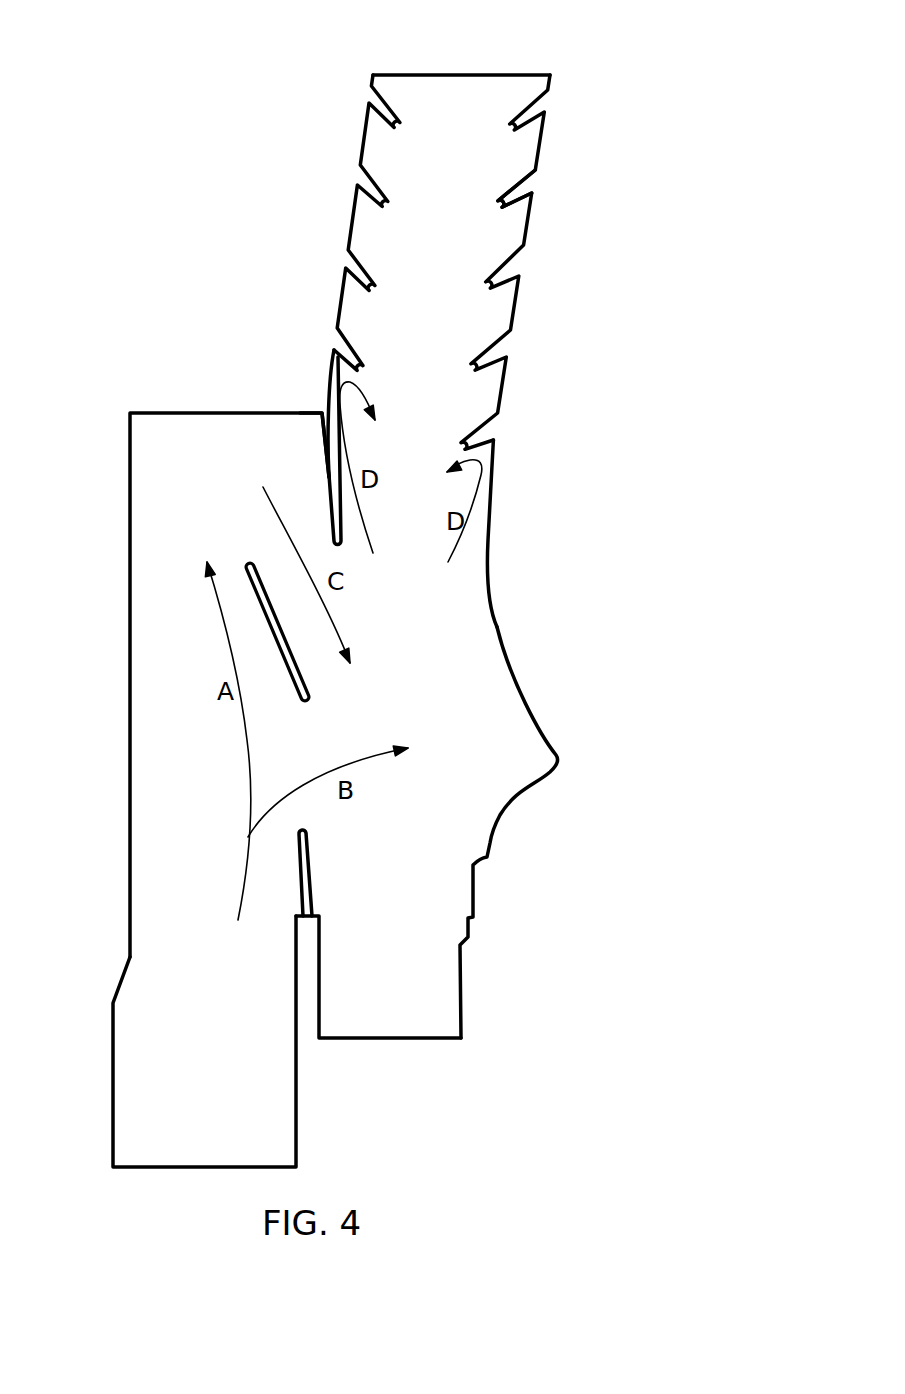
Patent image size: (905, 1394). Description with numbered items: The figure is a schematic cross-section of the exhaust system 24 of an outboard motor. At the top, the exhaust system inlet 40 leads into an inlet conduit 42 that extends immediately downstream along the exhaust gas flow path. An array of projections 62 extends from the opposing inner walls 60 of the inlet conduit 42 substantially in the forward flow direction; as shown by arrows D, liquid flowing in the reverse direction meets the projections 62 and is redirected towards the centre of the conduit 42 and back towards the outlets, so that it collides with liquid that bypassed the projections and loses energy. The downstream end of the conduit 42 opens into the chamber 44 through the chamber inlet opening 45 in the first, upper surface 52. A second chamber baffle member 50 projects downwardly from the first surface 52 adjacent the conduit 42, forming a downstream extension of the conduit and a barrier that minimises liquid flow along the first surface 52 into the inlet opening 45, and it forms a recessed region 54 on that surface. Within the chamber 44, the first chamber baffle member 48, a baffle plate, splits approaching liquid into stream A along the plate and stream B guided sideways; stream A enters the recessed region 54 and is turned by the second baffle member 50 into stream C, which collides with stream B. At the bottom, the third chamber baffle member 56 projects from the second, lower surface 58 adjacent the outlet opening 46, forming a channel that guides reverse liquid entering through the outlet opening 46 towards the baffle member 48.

The exhaust system 24 is at (122, 114).
The exhaust system inlet 40 is at (456, 74).
The inlet conduit 42 is at (462, 241).
The chamber 44 is at (385, 710).
The chamber inlet opening 45 is at (438, 487).
The outlet opening 46 is at (205, 980).
The first chamber baffle member 48 is at (260, 598).
The second chamber baffle member 50 is at (333, 482).
The first surface 52 is at (298, 411).
The recessed region 54 is at (217, 448).
The third chamber baffle member 56 is at (305, 870).
The second surface 58 is at (403, 1040).
The inner wall 60 is at (353, 213).
The array of projections 62 is at (515, 199).